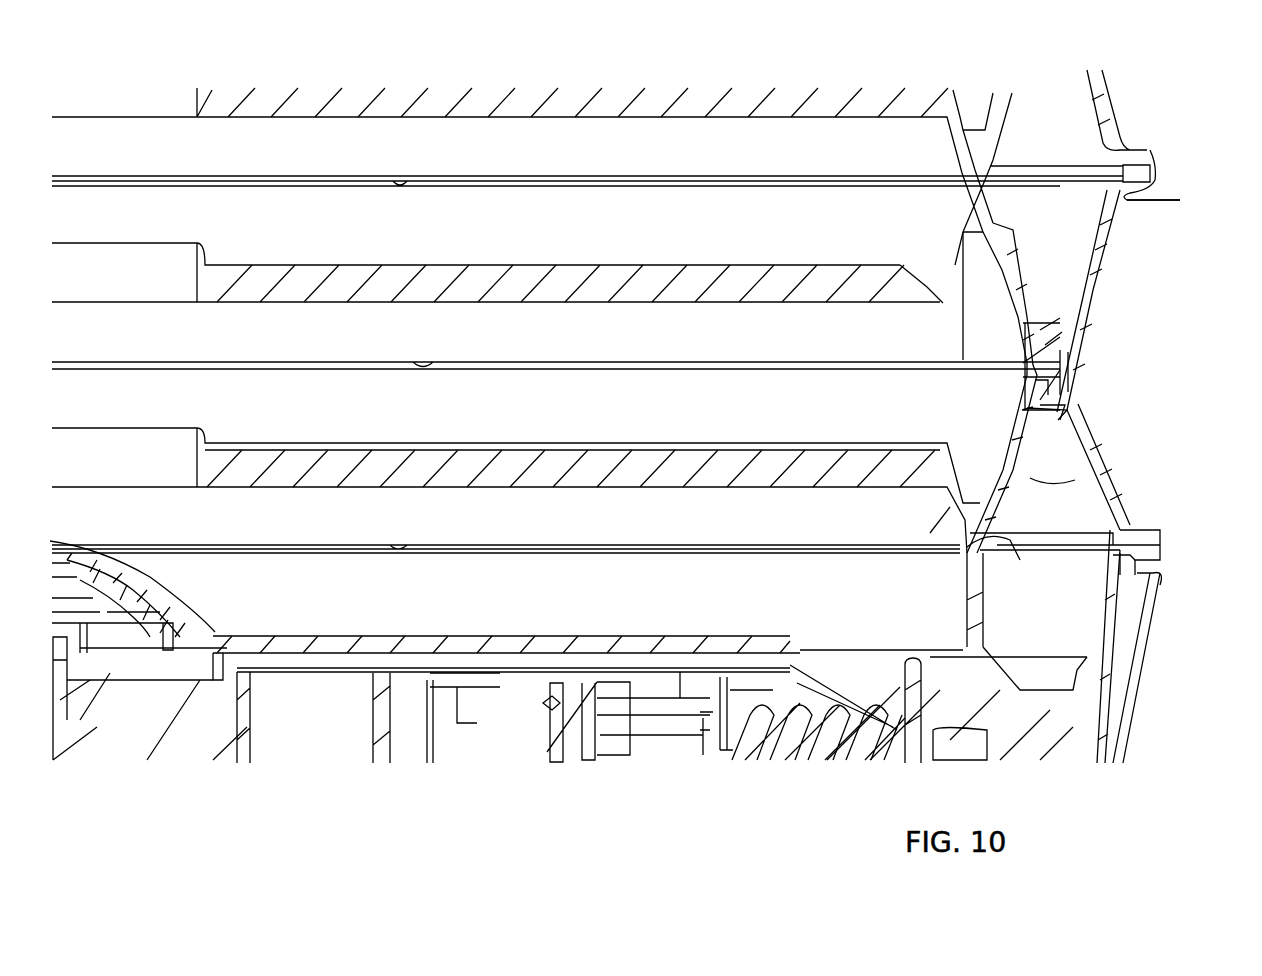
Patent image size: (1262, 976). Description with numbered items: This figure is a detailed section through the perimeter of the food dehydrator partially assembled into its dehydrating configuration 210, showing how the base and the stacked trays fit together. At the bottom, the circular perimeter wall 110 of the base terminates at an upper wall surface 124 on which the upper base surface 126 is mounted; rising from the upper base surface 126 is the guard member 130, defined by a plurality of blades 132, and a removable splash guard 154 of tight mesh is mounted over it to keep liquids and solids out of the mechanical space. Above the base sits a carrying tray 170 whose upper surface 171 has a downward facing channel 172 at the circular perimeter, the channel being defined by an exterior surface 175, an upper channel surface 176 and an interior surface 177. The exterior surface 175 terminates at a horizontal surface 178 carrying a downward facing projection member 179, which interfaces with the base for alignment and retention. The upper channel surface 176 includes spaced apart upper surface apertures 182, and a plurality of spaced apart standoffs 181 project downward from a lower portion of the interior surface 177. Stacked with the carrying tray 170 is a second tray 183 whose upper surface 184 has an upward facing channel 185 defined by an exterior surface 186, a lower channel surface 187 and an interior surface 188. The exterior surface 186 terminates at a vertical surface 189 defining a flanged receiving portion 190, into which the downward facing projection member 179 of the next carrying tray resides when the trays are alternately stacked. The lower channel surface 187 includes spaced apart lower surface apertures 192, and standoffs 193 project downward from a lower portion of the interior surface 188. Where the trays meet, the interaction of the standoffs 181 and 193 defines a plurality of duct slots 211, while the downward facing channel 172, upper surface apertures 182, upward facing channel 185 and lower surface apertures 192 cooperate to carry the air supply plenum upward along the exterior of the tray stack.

The circular perimeter wall 110 is at (1118, 730).
The upper wall surface 124 is at (1160, 582).
The upper base surface 126 is at (790, 645).
The guard member 130 is at (175, 650).
The blades 132 is at (93, 597).
The removable splash guard 154 is at (175, 650).
The carrying tray 170 is at (1105, 450).
The upper surface 171 is at (298, 443).
The downward facing channel 172 is at (1050, 472).
The exterior surface 175 is at (1100, 466).
The upper channel surface 176 is at (1062, 412).
The interior surface 177 is at (997, 447).
The horizontal surface 178 is at (1130, 520).
The downward facing projection member 179 is at (1140, 545).
The standoffs 181 is at (1080, 368).
The upper surface apertures 182 is at (1070, 388).
The second tray 183 is at (1113, 251).
The upper surface 184 is at (500, 262).
The upward facing channel 185 is at (1055, 297).
The exterior surface 186 is at (1115, 224).
The lower channel surface 187 is at (1075, 318).
The interior surface 188 is at (993, 233).
The vertical surface 189 is at (1150, 178).
The flanged receiving portion 190 is at (1147, 152).
The lower surface apertures 192 is at (1060, 345).
The standoffs 193 is at (963, 360).
The dehydrating configuration 210 is at (1150, 203).
The duct slots 211 is at (605, 177).